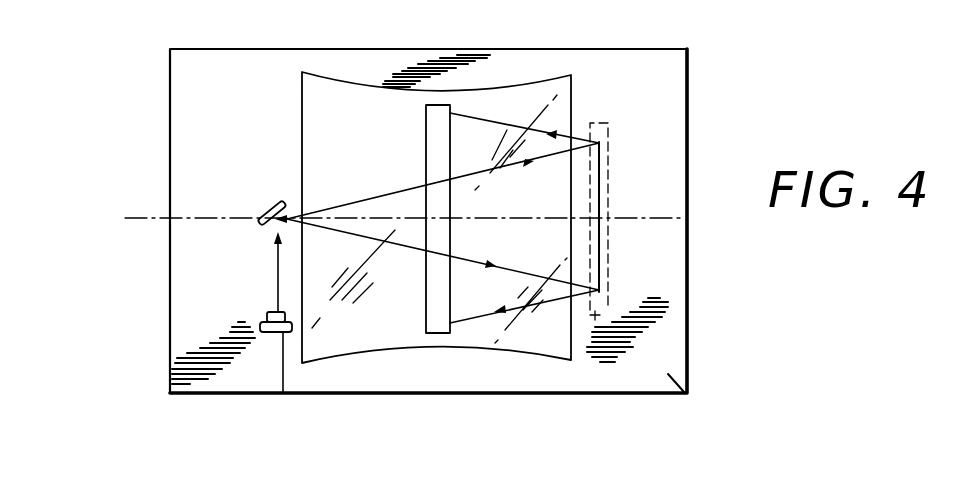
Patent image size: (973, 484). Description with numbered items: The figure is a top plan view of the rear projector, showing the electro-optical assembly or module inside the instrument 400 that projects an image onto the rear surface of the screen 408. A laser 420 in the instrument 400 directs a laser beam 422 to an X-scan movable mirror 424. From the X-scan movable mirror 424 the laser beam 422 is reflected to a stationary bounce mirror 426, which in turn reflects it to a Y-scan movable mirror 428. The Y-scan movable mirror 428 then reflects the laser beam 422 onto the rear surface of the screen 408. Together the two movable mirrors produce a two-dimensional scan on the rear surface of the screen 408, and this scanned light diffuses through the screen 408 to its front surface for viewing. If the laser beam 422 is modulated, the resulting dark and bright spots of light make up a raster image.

The instrument 400 is at (168, 394).
The screen 408 is at (512, 342).
The laser 420 is at (283, 393).
The laser beam 422 is at (276, 289).
The X-scan movable mirror 424 is at (270, 226).
The stationary bounce mirror 426 is at (591, 328).
The Y-scan movable mirror 428 is at (426, 333).